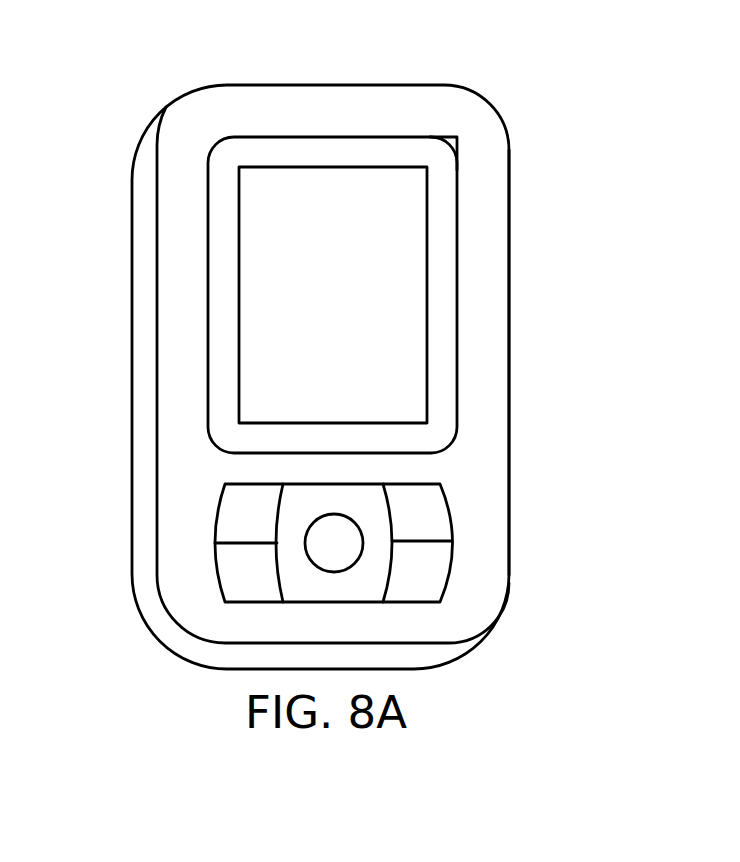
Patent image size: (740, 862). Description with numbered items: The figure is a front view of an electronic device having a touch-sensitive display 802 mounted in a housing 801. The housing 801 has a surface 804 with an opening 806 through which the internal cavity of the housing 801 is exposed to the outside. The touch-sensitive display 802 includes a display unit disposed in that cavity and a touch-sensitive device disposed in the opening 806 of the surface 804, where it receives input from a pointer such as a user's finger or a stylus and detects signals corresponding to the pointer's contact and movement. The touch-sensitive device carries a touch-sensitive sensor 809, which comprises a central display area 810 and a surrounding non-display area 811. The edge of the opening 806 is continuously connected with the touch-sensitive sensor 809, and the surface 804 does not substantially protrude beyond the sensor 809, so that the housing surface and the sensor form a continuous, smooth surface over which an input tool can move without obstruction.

The housing 801 is at (482, 532).
The touch-sensitive display 802 is at (457, 388).
The surface 804 is at (188, 508).
The opening 806 is at (457, 253).
The touch-sensitive sensor 809 is at (438, 174).
The display area 810 is at (372, 210).
The non-display area 811 is at (282, 150).